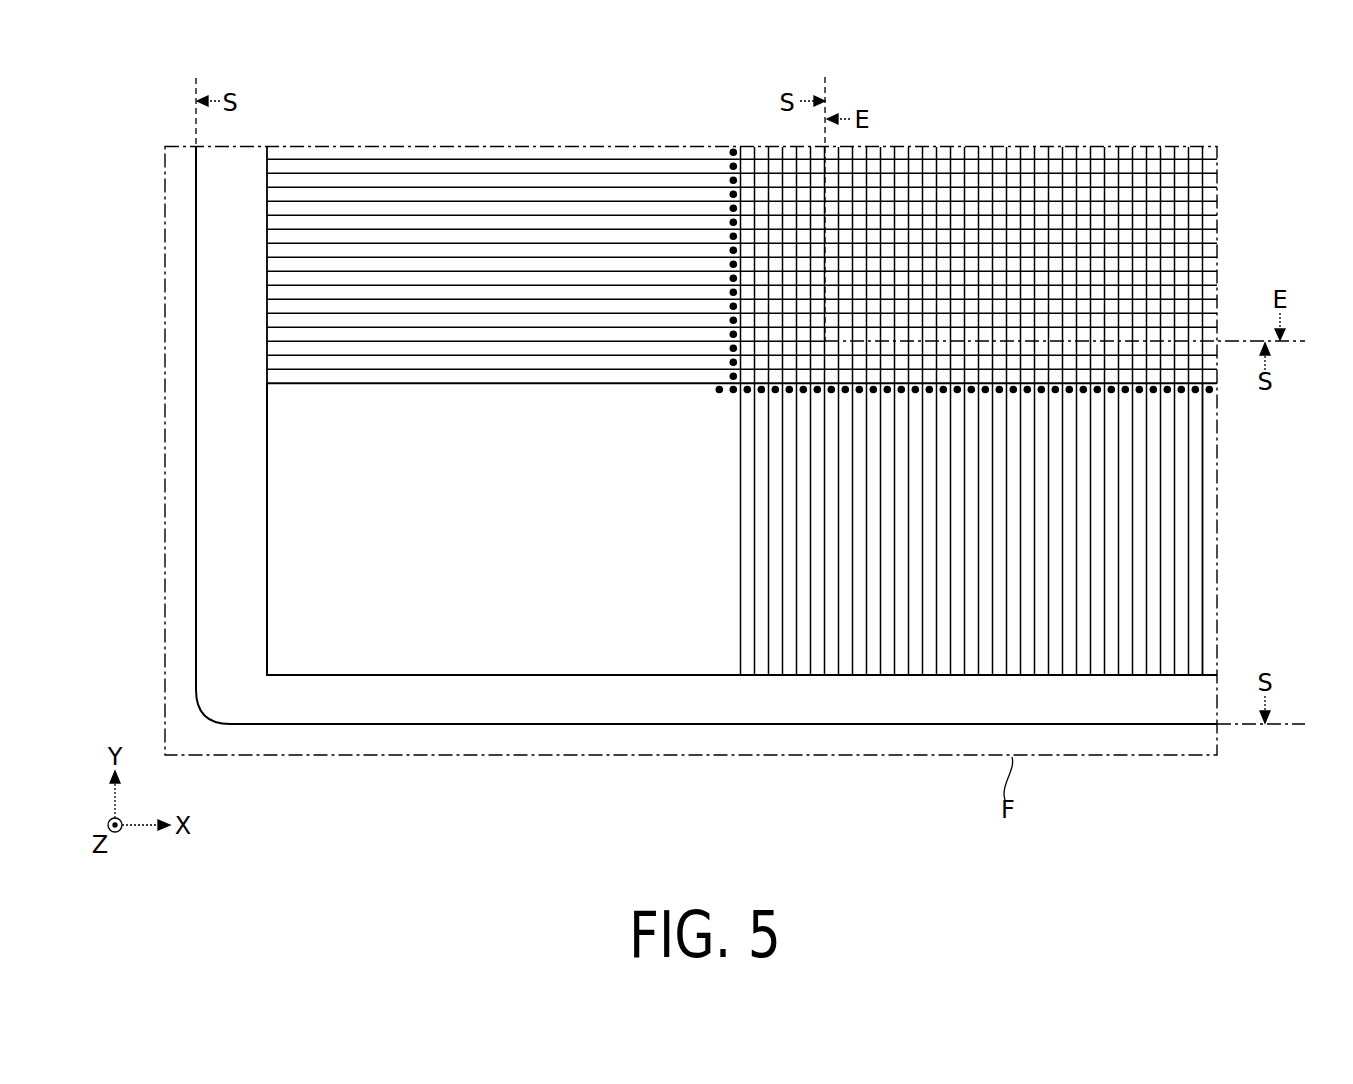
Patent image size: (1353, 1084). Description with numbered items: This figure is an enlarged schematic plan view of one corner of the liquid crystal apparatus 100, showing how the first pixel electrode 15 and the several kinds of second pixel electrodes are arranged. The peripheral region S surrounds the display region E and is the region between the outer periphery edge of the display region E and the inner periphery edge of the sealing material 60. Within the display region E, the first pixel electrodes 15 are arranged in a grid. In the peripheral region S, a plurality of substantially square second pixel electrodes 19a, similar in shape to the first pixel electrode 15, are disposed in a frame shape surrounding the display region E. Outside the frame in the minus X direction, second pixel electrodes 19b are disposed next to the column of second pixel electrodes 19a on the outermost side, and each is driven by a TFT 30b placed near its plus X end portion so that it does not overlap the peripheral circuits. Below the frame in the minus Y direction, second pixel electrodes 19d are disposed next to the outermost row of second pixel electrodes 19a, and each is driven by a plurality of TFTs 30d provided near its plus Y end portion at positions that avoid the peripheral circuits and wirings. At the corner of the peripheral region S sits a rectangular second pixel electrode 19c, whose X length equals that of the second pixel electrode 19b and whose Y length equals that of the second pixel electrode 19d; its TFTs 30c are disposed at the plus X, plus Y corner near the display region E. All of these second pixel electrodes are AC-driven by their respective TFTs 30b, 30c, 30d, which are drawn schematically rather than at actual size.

The liquid crystal apparatus 100 is at (1203, 101).
The sealing material 60 is at (812, 740).
The first pixel electrode 15 is at (1115, 165).
The second pixel electrode 19a is at (760, 160).
The second pixel electrode 19b is at (522, 160).
The second pixel electrode 19c is at (506, 625).
The second pixel electrode 19d is at (1198, 543).
The TFT 30b is at (730, 166).
The TFT 30c is at (733, 394).
The TFT 30d is at (1196, 394).